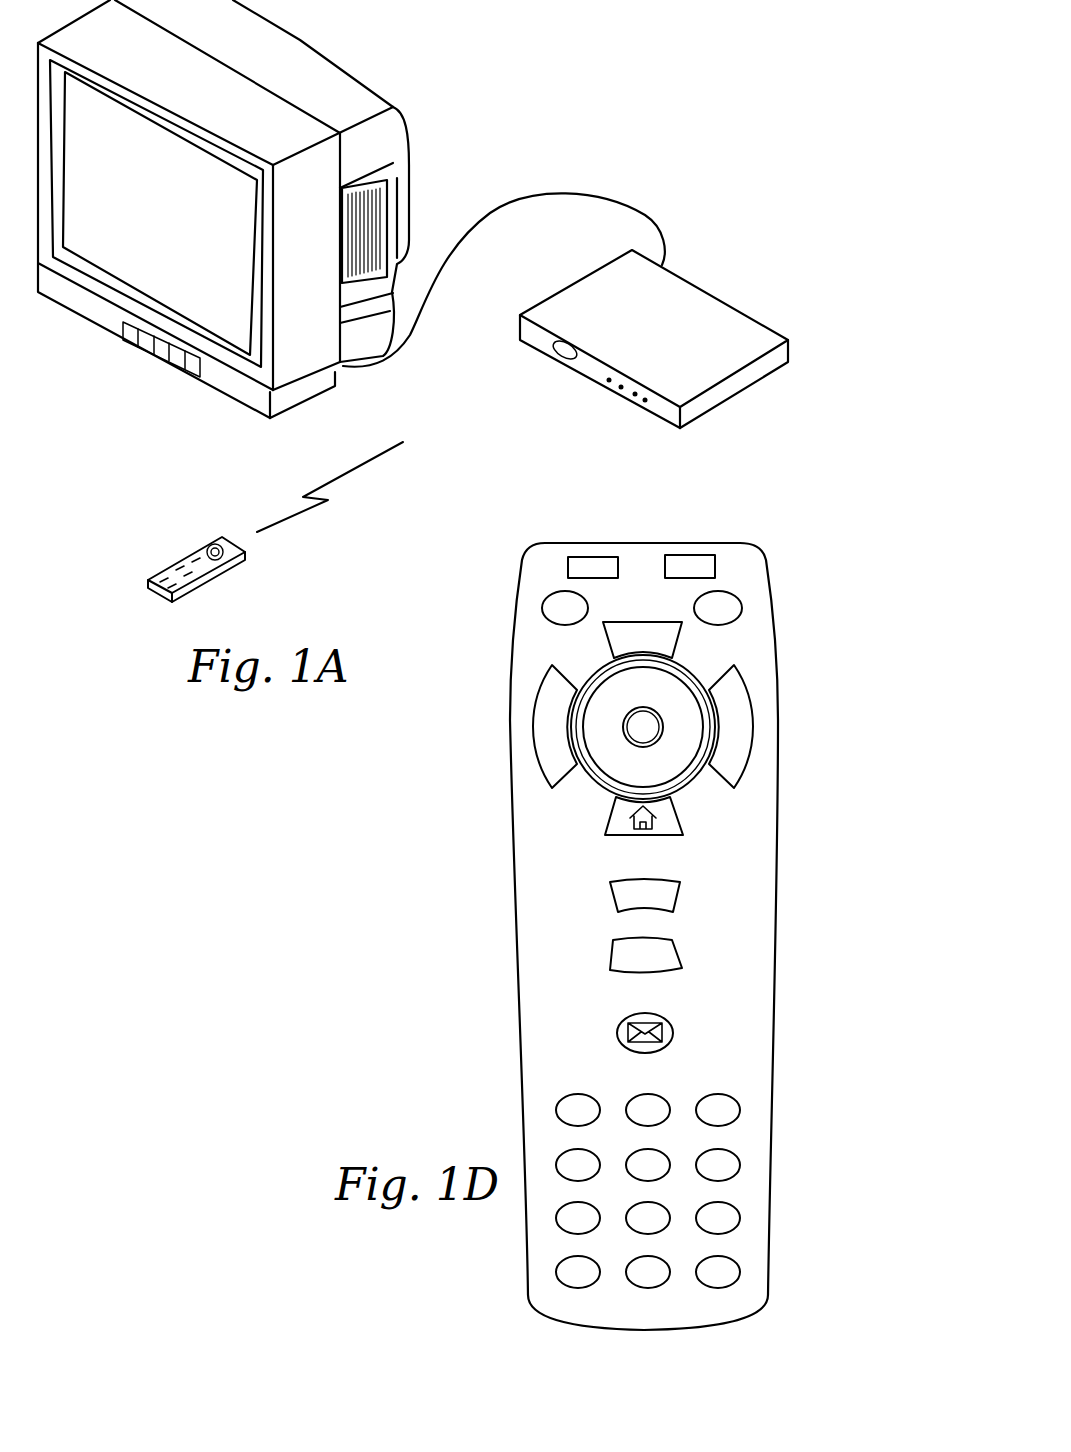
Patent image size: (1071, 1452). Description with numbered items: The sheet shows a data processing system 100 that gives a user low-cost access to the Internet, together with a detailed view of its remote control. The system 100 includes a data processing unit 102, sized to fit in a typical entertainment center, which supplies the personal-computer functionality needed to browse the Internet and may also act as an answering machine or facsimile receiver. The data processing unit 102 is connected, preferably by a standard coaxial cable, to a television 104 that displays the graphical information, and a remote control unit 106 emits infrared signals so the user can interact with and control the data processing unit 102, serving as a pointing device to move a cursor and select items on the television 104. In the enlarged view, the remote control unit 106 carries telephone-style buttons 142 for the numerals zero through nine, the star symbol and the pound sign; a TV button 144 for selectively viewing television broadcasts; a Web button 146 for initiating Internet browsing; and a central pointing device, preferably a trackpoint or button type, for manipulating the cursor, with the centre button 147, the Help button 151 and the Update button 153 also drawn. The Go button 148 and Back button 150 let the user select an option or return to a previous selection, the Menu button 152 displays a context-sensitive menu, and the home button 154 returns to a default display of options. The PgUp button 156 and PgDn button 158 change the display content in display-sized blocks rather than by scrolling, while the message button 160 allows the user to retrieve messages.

In FIG. 1A, the data processing system 100 is at (523, 456).
In FIG. 1A, the data processing unit 102 is at (728, 300).
In FIG. 1A, the television 104 is at (370, 72).
In FIG. 1A, the remote control unit 106 is at (170, 566).
In FIG. 1D, the remote control unit 106 is at (770, 1060).
In FIG. 1D, the buttons 142 is at (778, 1083).
In FIG. 1D, the TV button 144 is at (590, 556).
In FIG. 1D, the Web button 146 is at (690, 556).
In FIG. 1D, the select button 147 is at (662, 727).
In FIG. 1D, the Go button 148 is at (727, 788).
In FIG. 1D, the Back button 150 is at (560, 788).
In FIG. 1D, the Help button 151 is at (542, 606).
In FIG. 1D, the Menu button 152 is at (648, 620).
In FIG. 1D, the Update button 153 is at (741, 610).
In FIG. 1D, the home button 154 is at (670, 836).
In FIG. 1D, the PgUp button 156 is at (675, 895).
In FIG. 1D, the PgDn button 158 is at (668, 970).
In FIG. 1D, the message button 160 is at (673, 1036).